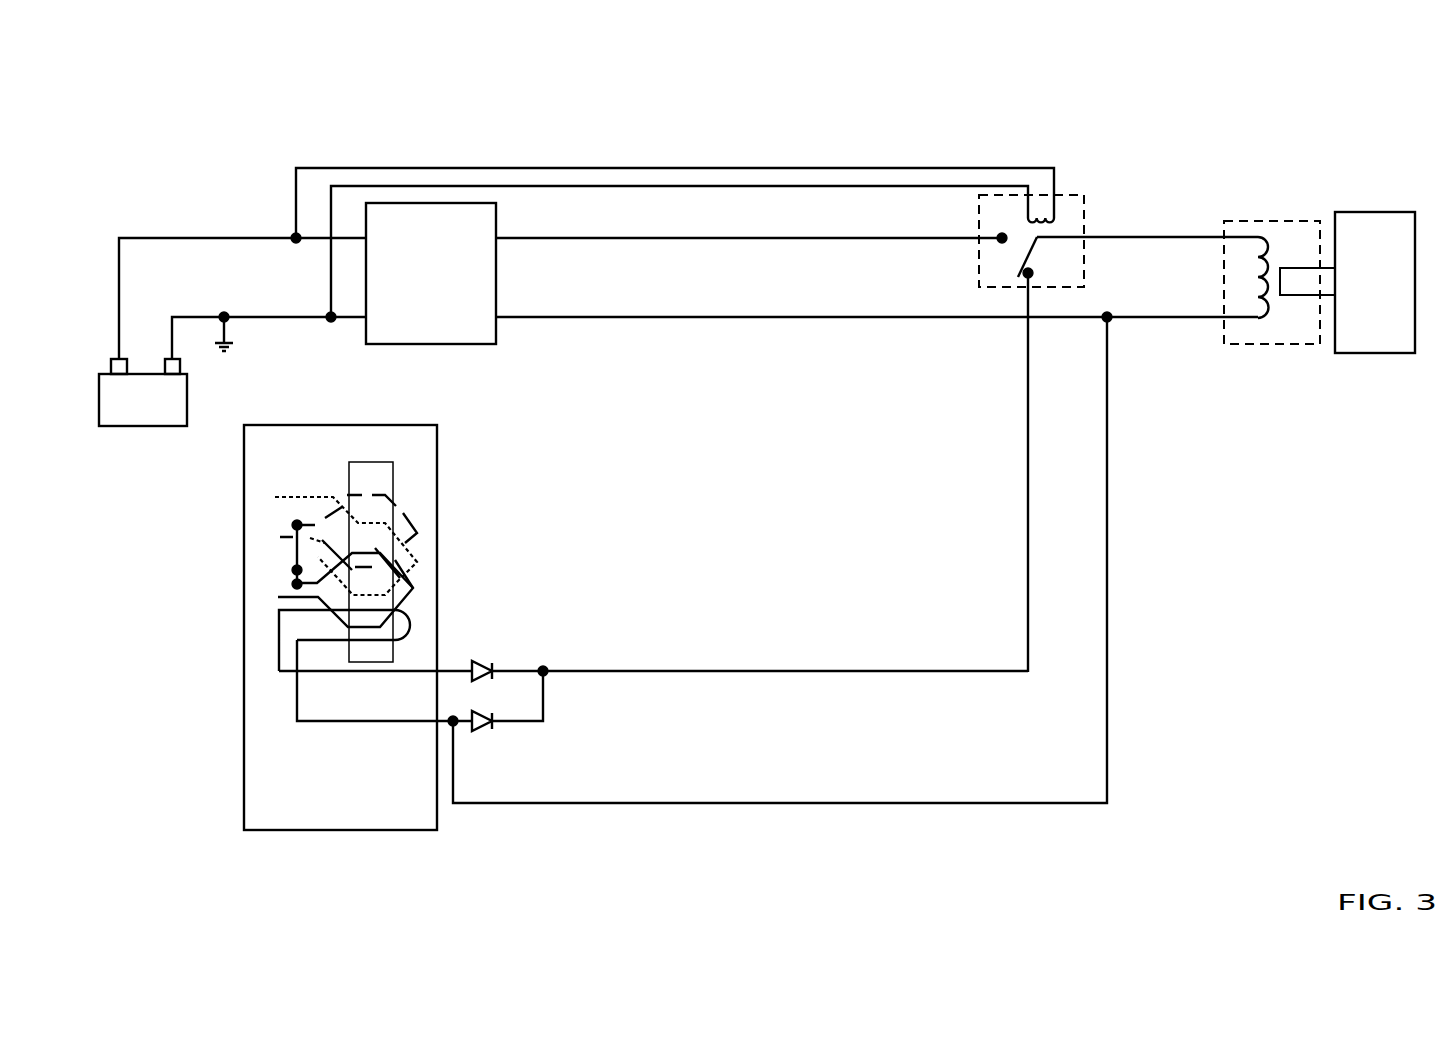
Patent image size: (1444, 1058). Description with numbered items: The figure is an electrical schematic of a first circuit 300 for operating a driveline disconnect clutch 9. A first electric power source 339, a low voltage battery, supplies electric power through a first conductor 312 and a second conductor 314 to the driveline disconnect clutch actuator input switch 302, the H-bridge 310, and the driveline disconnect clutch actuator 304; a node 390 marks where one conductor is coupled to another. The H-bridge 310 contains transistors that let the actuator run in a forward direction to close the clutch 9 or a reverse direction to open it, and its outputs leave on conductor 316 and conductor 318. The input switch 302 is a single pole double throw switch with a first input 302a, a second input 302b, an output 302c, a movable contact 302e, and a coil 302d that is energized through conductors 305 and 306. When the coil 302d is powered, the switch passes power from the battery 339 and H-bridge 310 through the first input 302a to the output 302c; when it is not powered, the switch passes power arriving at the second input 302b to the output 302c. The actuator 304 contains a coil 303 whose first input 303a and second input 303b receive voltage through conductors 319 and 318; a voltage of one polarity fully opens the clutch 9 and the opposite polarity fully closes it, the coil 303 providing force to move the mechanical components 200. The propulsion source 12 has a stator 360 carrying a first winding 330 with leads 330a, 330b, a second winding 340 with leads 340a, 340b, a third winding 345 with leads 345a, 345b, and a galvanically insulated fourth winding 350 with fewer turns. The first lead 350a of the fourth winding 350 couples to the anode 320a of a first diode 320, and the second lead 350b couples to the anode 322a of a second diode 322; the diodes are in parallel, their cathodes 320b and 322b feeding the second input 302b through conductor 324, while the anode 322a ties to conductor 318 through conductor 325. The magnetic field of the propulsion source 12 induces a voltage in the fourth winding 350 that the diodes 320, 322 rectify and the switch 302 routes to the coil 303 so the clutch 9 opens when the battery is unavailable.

The first circuit 300 is at (1306, 86).
The conductor 305 is at (822, 168).
The conductor 306 is at (768, 186).
The H-bridge 310 is at (431, 273).
The first conductor 312 is at (212, 238).
The second conductor 314 is at (290, 318).
The H-bridge first output line 316 is at (570, 238).
The conductor 318 is at (575, 317).
The node 390 is at (294, 237).
The first electric power source 339 is at (163, 411).
The driveline disconnect clutch actuator input switch 302 is at (1079, 409).
The first input 302a is at (999, 236).
The second input 302b is at (1026, 277).
The output 302c is at (1092, 237).
The coil 302d is at (1057, 214).
The relay switch arm 302e is at (1040, 254).
The coil 303 is at (1209, 260).
The first input 303a is at (1212, 239).
The second input 303b is at (1207, 319).
The driveline disconnect clutch actuator 304 is at (1224, 344).
The conductor 319 is at (1215, 209).
The mechanical components 200 is at (1307, 281).
The driveline disconnect clutch 9 is at (1375, 282).
The propulsion source 12 is at (352, 812).
The stator 360 is at (373, 462).
The first winding 330 is at (340, 524).
The first lead 330a is at (318, 476).
The second lead 330b is at (296, 548).
The second winding 340 is at (326, 538).
The first lead 340a is at (320, 516).
The second lead 340b is at (292, 525).
The third winding 345 is at (336, 577).
The first lead 345a is at (292, 570).
The second lead 345b is at (292, 585).
The fourth winding 350 is at (300, 640).
The first lead 350a is at (278, 597).
The second lead 350b is at (297, 643).
The first diode 320 is at (429, 647).
The anode 320a is at (470, 668).
The cathode 320b is at (497, 670).
The second diode 322 is at (517, 725).
The anode 322a is at (455, 726).
The cathode 322b is at (495, 727).
The conductor 324 is at (712, 672).
The conductor 325 is at (659, 803).